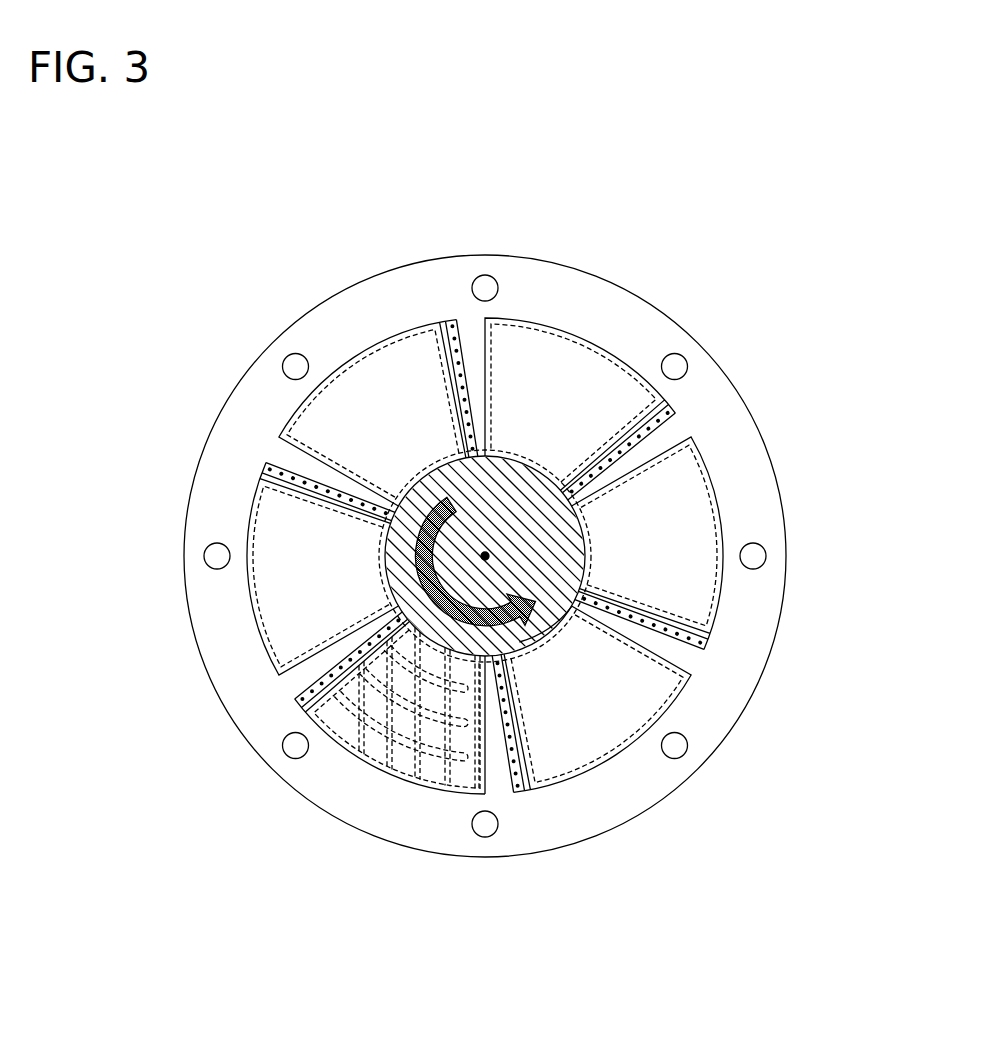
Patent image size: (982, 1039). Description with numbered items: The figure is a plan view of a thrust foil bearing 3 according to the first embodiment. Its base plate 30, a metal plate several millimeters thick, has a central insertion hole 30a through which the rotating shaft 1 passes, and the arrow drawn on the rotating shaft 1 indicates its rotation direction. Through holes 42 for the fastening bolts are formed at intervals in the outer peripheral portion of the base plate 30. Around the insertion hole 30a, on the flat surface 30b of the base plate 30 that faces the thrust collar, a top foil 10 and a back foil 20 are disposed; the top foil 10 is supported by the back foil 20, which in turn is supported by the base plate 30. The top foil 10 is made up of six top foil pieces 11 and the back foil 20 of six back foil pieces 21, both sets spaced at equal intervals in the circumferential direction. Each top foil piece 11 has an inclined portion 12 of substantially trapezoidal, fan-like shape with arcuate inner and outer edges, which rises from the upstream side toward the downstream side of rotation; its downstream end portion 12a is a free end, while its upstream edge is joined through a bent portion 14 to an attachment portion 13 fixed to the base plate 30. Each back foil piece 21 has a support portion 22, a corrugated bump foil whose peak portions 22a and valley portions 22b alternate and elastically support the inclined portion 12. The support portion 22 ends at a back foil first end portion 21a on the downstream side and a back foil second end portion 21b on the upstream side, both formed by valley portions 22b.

The rotating shaft 1 is at (415, 498).
The thrust foil bearing 3 is at (628, 260).
The top foil 10 is at (340, 815).
The top foil piece 11 is at (456, 795).
The inclined portion 12 is at (380, 752).
The end portion on the other side in the circumferential direction 12a is at (490, 748).
The attachment portion 13 is at (344, 712).
The bent portion 14 is at (355, 740).
The back foil 20 is at (395, 777).
The back foil piece 21 is at (396, 797).
The back foil first end portion 21a is at (489, 757).
The back foil second end portion 21b is at (340, 637).
The support portion 22 is at (351, 823).
The peak portion 22a is at (338, 750).
The valley portion 22b is at (390, 758).
The base plate 30 is at (517, 255).
The insertion hole 30a is at (570, 618).
The flat surface 30b is at (672, 653).
The through hole 42 is at (497, 279).